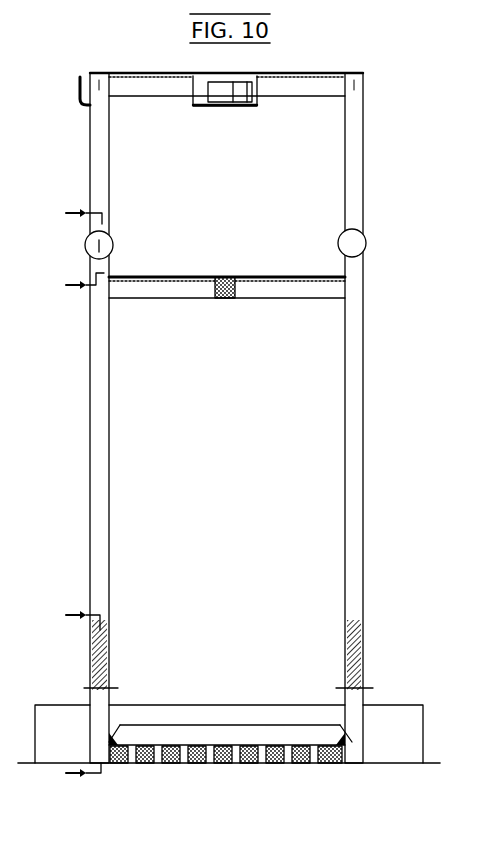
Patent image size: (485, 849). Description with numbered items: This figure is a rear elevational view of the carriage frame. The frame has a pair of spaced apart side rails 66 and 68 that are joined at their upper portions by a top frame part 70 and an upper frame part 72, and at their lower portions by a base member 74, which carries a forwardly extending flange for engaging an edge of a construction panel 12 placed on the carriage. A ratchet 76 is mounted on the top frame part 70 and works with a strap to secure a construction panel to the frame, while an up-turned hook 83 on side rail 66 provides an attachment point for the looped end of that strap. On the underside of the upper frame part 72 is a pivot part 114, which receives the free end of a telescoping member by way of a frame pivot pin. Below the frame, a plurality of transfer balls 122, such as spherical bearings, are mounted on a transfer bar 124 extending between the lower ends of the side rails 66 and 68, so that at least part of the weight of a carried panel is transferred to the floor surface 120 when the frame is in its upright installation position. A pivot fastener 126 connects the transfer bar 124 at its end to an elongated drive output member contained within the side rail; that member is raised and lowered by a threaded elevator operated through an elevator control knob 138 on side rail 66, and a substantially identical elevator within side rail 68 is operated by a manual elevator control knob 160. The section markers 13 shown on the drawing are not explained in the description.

The construction panel 12 is at (68, 695).
The section line 13- 13 is at (69, 249).
The side rail 66 is at (100, 475).
The side rail 68 is at (355, 475).
The top frame part 70 is at (297, 88).
The upper frame part 72 is at (162, 288).
The base member 74 is at (230, 719).
The ratchet 76 is at (188, 109).
The up-turned hook 83 is at (79, 78).
The pivot part 114 is at (236, 300).
The floor surface 120 is at (393, 765).
The transfer balls 122 is at (330, 765).
The transfer bar 124 is at (228, 730).
The pivot fastener 126 is at (114, 736).
The elevator control knob 138 is at (114, 245).
The manual elevator control knob 160 is at (338, 243).